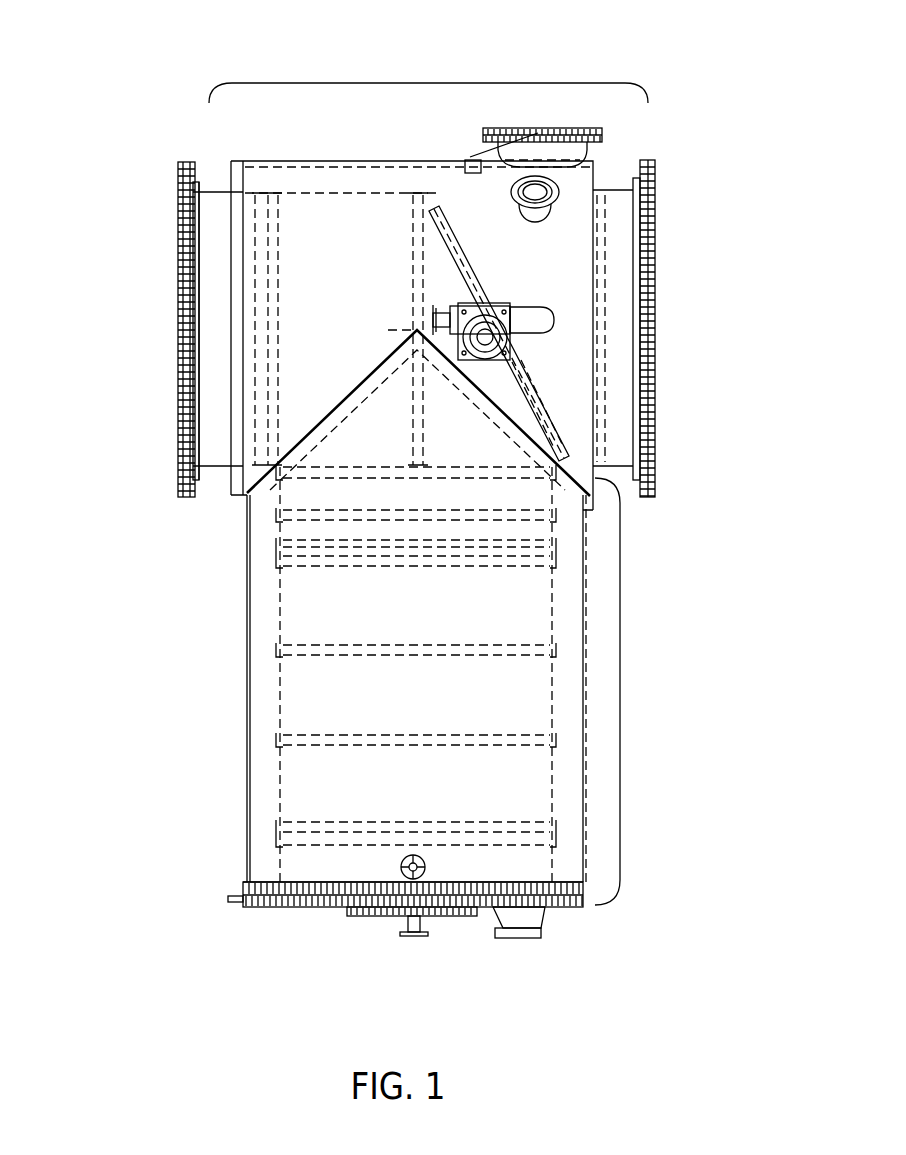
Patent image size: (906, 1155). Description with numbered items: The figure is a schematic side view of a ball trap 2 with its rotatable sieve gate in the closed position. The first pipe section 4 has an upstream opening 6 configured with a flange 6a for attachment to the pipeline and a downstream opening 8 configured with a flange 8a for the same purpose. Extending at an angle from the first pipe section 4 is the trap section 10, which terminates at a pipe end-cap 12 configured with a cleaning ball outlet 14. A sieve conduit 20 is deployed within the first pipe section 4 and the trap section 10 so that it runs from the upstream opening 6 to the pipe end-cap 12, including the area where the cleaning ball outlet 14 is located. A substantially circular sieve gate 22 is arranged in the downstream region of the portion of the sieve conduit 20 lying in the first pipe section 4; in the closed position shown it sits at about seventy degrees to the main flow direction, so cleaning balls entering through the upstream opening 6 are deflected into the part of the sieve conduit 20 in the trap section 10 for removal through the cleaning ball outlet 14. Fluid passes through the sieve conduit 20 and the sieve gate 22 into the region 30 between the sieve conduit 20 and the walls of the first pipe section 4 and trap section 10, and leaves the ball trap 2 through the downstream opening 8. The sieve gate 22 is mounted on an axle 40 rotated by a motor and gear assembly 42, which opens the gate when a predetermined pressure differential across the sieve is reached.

The ball trap 2 is at (164, 95).
The first pipe section 4 is at (403, 82).
The upstream opening 6 is at (144, 357).
The flange 6a is at (172, 495).
The downstream opening 8 is at (682, 410).
The flange 8a is at (647, 498).
The trap section 10 is at (620, 733).
The pipe end-cap 12 is at (292, 895).
The cleaning ball outlet 14 is at (528, 915).
The sieve conduit 20 is at (325, 607).
The sieve gate 22 is at (445, 246).
The region 30 is at (362, 178).
The axle 40 is at (510, 342).
The motor and gear assembly 42 is at (527, 320).